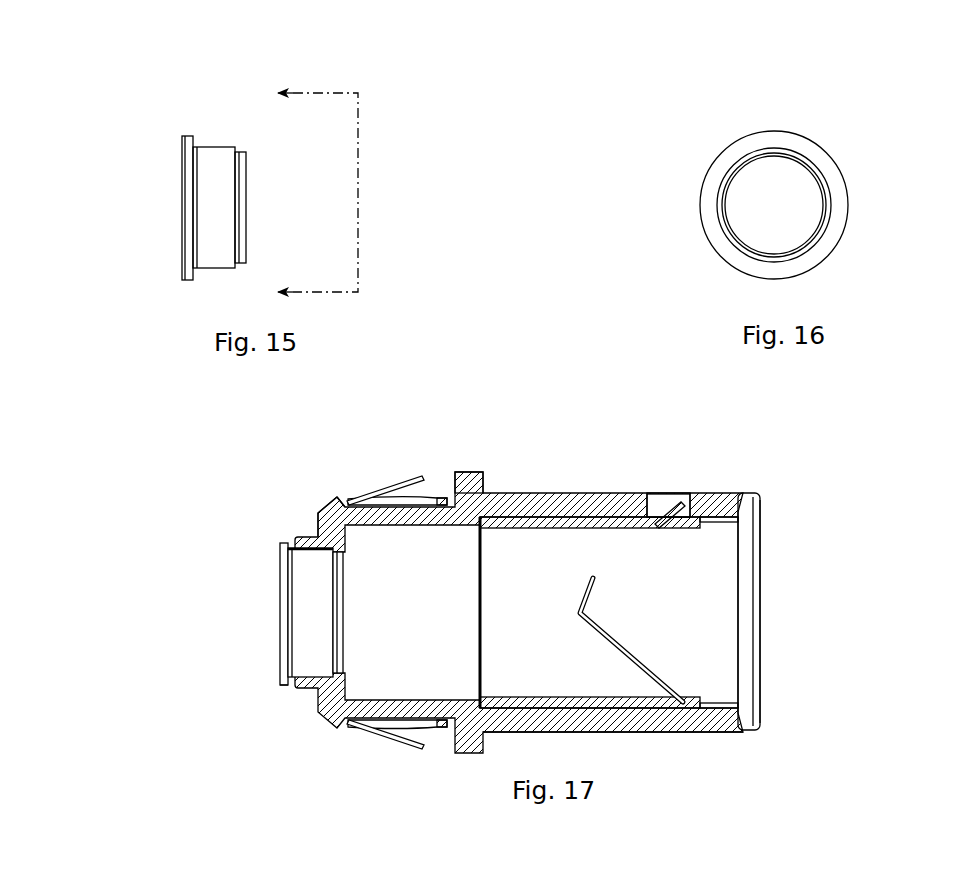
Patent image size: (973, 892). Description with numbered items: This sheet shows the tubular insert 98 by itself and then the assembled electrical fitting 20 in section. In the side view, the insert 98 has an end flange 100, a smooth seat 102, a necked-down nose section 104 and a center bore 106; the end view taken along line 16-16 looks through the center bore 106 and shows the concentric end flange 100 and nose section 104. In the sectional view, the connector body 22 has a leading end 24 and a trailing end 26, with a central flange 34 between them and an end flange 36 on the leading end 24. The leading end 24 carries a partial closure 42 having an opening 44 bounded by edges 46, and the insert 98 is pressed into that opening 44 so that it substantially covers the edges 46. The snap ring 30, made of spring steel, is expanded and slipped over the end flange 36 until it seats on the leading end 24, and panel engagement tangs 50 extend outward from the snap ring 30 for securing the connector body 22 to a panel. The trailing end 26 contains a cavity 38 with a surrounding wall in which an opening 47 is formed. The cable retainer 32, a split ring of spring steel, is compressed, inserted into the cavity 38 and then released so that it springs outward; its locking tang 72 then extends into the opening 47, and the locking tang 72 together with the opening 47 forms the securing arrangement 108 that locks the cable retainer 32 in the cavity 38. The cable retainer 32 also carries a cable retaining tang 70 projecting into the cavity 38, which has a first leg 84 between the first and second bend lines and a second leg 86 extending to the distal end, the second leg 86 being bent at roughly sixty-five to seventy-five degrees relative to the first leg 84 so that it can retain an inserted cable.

In FIG. 15, the line 16- 16 is at (318, 192).
In FIG. 17, the electrical fitting 20 is at (201, 498).
In FIG. 17, the connector body 22 is at (747, 492).
In FIG. 17, the leading end 24 is at (288, 687).
In FIG. 17, the trailing end 26 is at (762, 610).
In FIG. 17, the snap ring 30 is at (362, 500).
In FIG. 17, the cable retainer 32 is at (612, 612).
In FIG. 17, the central flange 34 is at (468, 472).
In FIG. 17, the end flange 36 is at (337, 500).
In FIG. 17, the cavity 38 is at (635, 706).
In FIG. 17, the partial closure 42 is at (305, 535).
In FIG. 17, the opening 44 is at (308, 612).
In FIG. 17, the edges 46 is at (314, 560).
In FIG. 17, the opening 47 is at (655, 500).
In FIG. 17, the panel engagement tangs 50 is at (412, 478).
In FIG. 17, the cable retaining tang 70 is at (638, 653).
In FIG. 17, the locking tang 72 is at (677, 508).
In FIG. 17, the first leg 84 is at (610, 645).
In FIG. 17, the second leg 86 is at (587, 590).
In FIG. 15, the tubular insert 98 is at (133, 131).
In FIG. 16, the tubular insert 98 is at (678, 122).
In FIG. 17, the tubular insert 98 is at (280, 545).
In FIG. 15, the end flange 100 is at (183, 137).
In FIG. 16, the end flange 100 is at (786, 133).
In FIG. 15, the smooth seat 102 is at (212, 147).
In FIG. 15, the necked-down nose section 104 is at (240, 156).
In FIG. 16, the necked-down nose section 104 is at (828, 192).
In FIG. 16, the center bore 106 is at (776, 204).
In FIG. 17, the securing arrangement 108 is at (685, 470).